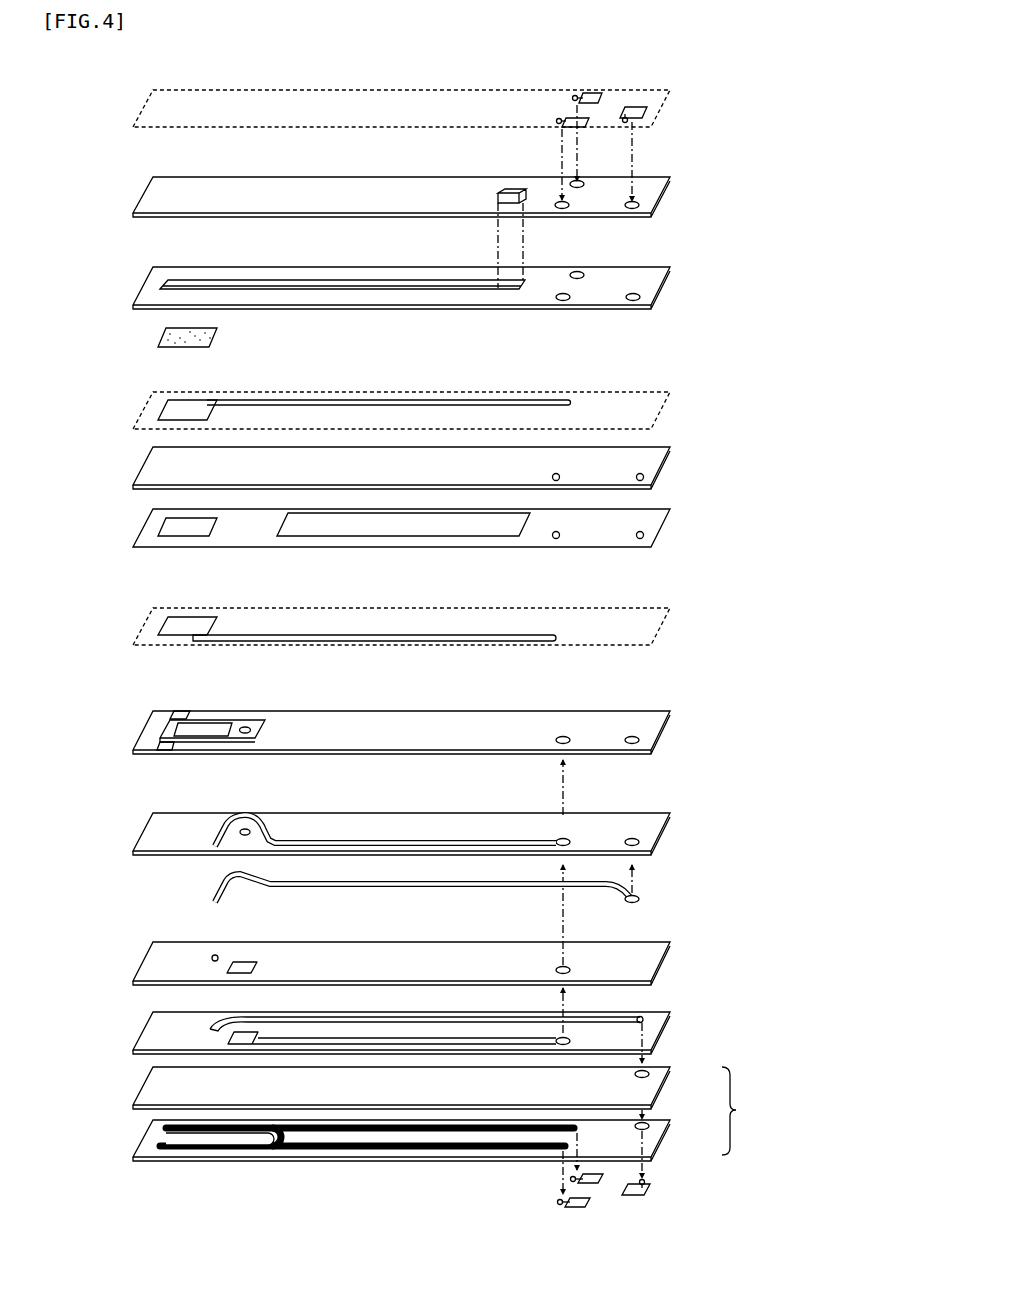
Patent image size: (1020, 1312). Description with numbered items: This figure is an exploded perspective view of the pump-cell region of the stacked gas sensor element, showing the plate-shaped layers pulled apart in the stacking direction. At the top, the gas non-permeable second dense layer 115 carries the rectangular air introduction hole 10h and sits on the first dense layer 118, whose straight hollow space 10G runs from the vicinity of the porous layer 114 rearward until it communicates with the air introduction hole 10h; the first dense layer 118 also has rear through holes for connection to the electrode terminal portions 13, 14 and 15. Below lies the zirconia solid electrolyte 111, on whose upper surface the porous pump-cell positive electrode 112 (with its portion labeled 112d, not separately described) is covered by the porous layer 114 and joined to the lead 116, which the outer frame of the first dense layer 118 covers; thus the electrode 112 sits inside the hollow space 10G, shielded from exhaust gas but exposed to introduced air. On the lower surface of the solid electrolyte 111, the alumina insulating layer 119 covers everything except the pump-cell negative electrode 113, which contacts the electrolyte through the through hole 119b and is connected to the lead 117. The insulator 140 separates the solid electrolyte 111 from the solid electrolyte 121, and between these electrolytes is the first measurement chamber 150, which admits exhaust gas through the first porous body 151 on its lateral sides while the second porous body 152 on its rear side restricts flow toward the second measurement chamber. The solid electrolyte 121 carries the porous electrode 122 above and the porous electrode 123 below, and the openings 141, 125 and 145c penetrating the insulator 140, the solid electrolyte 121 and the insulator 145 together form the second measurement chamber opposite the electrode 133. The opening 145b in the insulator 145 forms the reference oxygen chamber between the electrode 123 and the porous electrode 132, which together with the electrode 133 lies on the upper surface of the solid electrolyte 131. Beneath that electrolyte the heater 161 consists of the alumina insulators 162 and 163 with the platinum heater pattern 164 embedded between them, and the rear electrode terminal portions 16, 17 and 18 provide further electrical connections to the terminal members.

The hollow space 10G is at (190, 285).
The air introduction hole 10h is at (510, 190).
The electrode terminal portion 13 is at (582, 93).
The electrode terminal portion 14 is at (630, 107).
The electrode terminal portion 15 is at (559, 118).
The electrode terminal portion 16 is at (571, 1180).
The electrode terminal portion 17 is at (648, 1186).
The electrode terminal portion 18 is at (558, 1202).
The solid electrolyte 111 is at (678, 466).
The Ip1+ electrode 112 is at (170, 407).
The electrode pad extension 112d is at (213, 400).
The Ip1− electrode 113 is at (182, 620).
The porous layer 114 is at (217, 333).
The second dense layer 115 is at (452, 186).
The Ip1+ lead 116 is at (398, 400).
The Ip1− lead 117 is at (362, 633).
The first dense layer 118 is at (678, 282).
The alumina insulating layer 119 is at (678, 534).
The through hole 119b is at (206, 540).
The solid electrolyte 121 is at (678, 825).
The Vs− electrode 122 is at (226, 820).
The Vs+ electrode 123 is at (214, 889).
The opening 125 is at (247, 828).
The solid electrolyte 131 is at (668, 1028).
The Ip2+ electrode 132 is at (212, 1026).
The Ip2− electrode 133 is at (255, 1032).
The insulator 140 is at (678, 723).
The opening 141 is at (244, 727).
The insulator 145 is at (668, 958).
The opening 145b is at (211, 957).
The opening 145c is at (252, 962).
The first measurement chamber 150 is at (172, 727).
The first porous body 151 is at (180, 712).
The second porous body 152 is at (268, 720).
The heater 161 is at (747, 1111).
The insulator 162 is at (668, 1080).
The insulator 163 is at (668, 1135).
The heater pattern 164 is at (162, 1128).